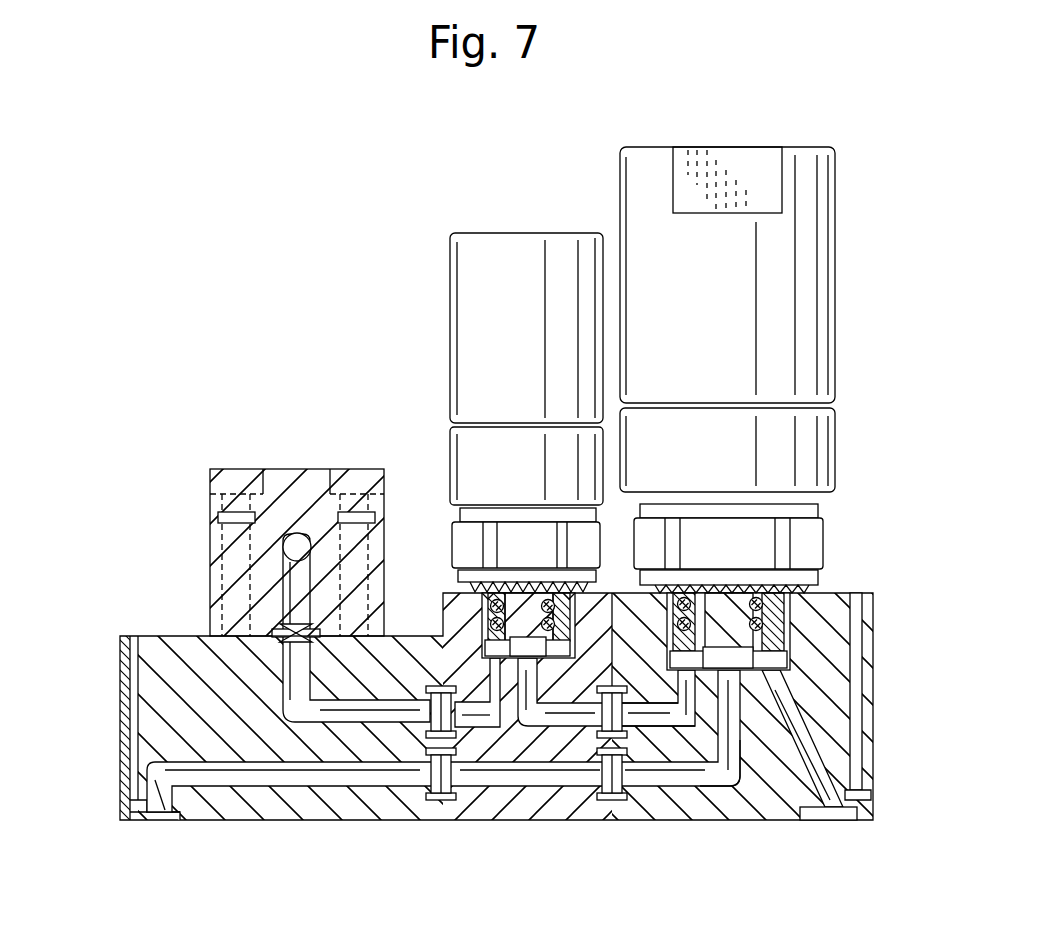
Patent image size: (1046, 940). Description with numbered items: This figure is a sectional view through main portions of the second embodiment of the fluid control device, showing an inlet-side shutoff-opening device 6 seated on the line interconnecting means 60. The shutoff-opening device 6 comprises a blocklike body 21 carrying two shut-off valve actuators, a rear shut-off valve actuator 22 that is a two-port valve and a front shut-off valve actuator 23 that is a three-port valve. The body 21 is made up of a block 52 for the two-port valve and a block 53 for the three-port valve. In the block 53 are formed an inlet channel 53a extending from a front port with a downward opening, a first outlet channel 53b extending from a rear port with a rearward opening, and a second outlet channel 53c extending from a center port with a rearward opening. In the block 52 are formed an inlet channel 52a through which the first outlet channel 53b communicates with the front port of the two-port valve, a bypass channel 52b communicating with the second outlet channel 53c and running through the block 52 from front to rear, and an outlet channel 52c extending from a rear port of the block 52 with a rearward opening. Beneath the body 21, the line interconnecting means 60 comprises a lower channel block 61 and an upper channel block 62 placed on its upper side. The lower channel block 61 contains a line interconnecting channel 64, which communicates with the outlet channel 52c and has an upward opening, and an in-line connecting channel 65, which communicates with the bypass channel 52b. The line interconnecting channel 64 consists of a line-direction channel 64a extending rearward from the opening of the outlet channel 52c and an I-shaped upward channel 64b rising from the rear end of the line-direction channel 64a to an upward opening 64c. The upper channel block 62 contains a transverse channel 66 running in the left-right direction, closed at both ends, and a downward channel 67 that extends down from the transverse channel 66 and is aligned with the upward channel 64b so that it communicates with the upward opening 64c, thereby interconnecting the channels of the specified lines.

The inlet-side shutoff-opening device 6 is at (836, 350).
The body 21 is at (700, 822).
The rear shut-off valve actuator 22 is at (470, 292).
The front shut-off valve actuator 23 is at (822, 260).
The block for the 2-port valve 52 is at (503, 812).
The inlet channel 52a is at (540, 726).
The bypass channel 52b is at (490, 780).
The outlet channel 52c is at (486, 702).
The block for the 3-port valve 53 is at (770, 808).
The inlet channel 53a is at (793, 734).
The first outlet channel 53b is at (650, 726).
The second outlet channel 53c is at (707, 782).
The line interconnecting means 60 is at (166, 494).
The lower channel block 61 is at (155, 652).
The upper channel block 62 is at (287, 478).
The line interconnecting channel 64 is at (307, 713).
The line-direction channel 64a is at (363, 713).
The upward channel 64b is at (285, 686).
The upward opening 64c is at (284, 622).
The in-line connecting channel 65 is at (220, 778).
The transverse channel 66 is at (305, 534).
The downward channel 67 is at (292, 575).